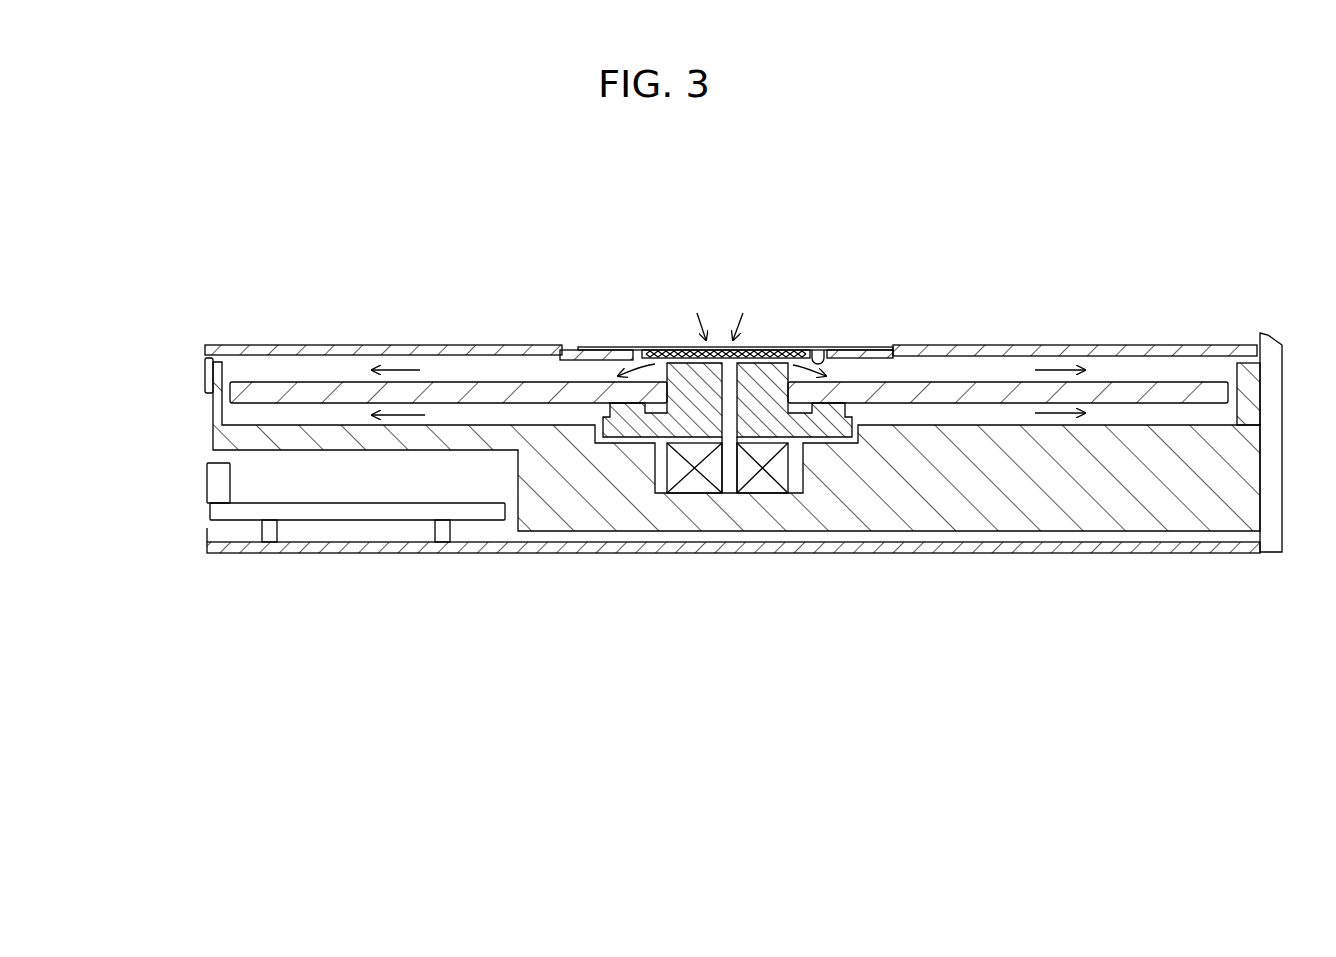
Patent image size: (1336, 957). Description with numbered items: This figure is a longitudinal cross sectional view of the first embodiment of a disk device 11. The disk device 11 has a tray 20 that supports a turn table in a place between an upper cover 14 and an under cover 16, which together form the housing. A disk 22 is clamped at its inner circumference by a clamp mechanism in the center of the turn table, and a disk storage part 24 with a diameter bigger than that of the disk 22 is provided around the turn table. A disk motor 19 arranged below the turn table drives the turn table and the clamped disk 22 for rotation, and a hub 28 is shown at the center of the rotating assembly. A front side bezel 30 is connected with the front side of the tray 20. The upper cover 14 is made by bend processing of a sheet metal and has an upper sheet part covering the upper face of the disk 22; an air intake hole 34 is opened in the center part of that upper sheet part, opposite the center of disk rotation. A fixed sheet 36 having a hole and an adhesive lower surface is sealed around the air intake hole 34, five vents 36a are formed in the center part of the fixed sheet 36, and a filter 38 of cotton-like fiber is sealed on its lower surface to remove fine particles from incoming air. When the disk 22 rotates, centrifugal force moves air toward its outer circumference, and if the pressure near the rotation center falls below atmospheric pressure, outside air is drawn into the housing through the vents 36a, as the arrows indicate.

The disk device 11 is at (958, 243).
The upper cover 14 is at (1040, 345).
The under cover 16 is at (972, 553).
The disk motor 19 is at (693, 485).
The tray 20 is at (1165, 515).
The disk 22 is at (933, 358).
The disk storage part 24 is at (490, 413).
The hub 28 is at (766, 372).
The front side bezel 30 is at (1280, 468).
The air intake hole 34 is at (819, 350).
The fixed sheet 36 is at (847, 348).
The vents 36a is at (717, 350).
The filter 38 is at (667, 350).